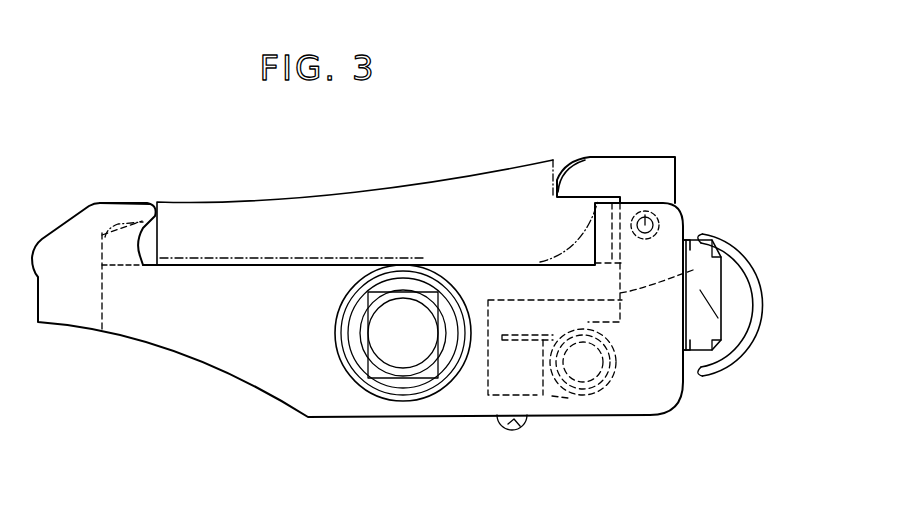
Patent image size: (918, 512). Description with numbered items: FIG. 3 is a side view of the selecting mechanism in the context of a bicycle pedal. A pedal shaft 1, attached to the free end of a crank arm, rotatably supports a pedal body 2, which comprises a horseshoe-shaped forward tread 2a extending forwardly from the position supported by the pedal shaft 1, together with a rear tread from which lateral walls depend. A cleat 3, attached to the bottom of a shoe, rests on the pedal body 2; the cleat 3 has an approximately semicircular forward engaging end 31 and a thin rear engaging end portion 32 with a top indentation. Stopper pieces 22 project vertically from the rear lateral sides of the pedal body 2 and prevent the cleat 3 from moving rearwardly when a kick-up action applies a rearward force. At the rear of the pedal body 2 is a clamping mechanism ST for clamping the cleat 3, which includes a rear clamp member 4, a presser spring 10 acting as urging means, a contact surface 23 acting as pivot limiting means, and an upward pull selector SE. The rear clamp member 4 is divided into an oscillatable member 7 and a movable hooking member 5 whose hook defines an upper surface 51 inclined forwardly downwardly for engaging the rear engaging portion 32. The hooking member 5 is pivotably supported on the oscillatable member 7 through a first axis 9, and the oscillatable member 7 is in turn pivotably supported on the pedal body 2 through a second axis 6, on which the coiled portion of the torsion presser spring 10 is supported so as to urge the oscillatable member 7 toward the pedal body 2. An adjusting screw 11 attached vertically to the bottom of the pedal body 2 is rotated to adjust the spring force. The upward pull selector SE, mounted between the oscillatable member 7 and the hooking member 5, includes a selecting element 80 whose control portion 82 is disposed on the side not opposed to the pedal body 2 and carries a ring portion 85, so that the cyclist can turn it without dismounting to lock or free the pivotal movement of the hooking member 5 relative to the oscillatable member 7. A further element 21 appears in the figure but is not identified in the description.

The pedal shaft 1 is at (404, 362).
The pedal body 2 is at (456, 258).
The forward tread 2a is at (210, 263).
The cleat 3 is at (345, 198).
The rear clamp member 4 is at (733, 112).
The movable hooking member 5 is at (682, 153).
The second axis 6 is at (597, 380).
The oscillatable member 7 is at (657, 253).
The first axis 9 is at (644, 196).
The presser spring 10 is at (568, 398).
The adjusting screw 11 is at (522, 430).
The hook portion 21 is at (136, 205).
The stopper pieces 22 is at (609, 206).
The contact surface 23 is at (723, 245).
The forward engaging end 31 is at (105, 236).
The rear engaging end portion 32 is at (561, 175).
The upper surface 51 is at (583, 163).
The selecting element 80 is at (724, 278).
The control portion 82 is at (706, 327).
The ring portion 85 is at (760, 327).
The clamping mechanism ST is at (813, 88).
The upward pull selector SE is at (802, 224).